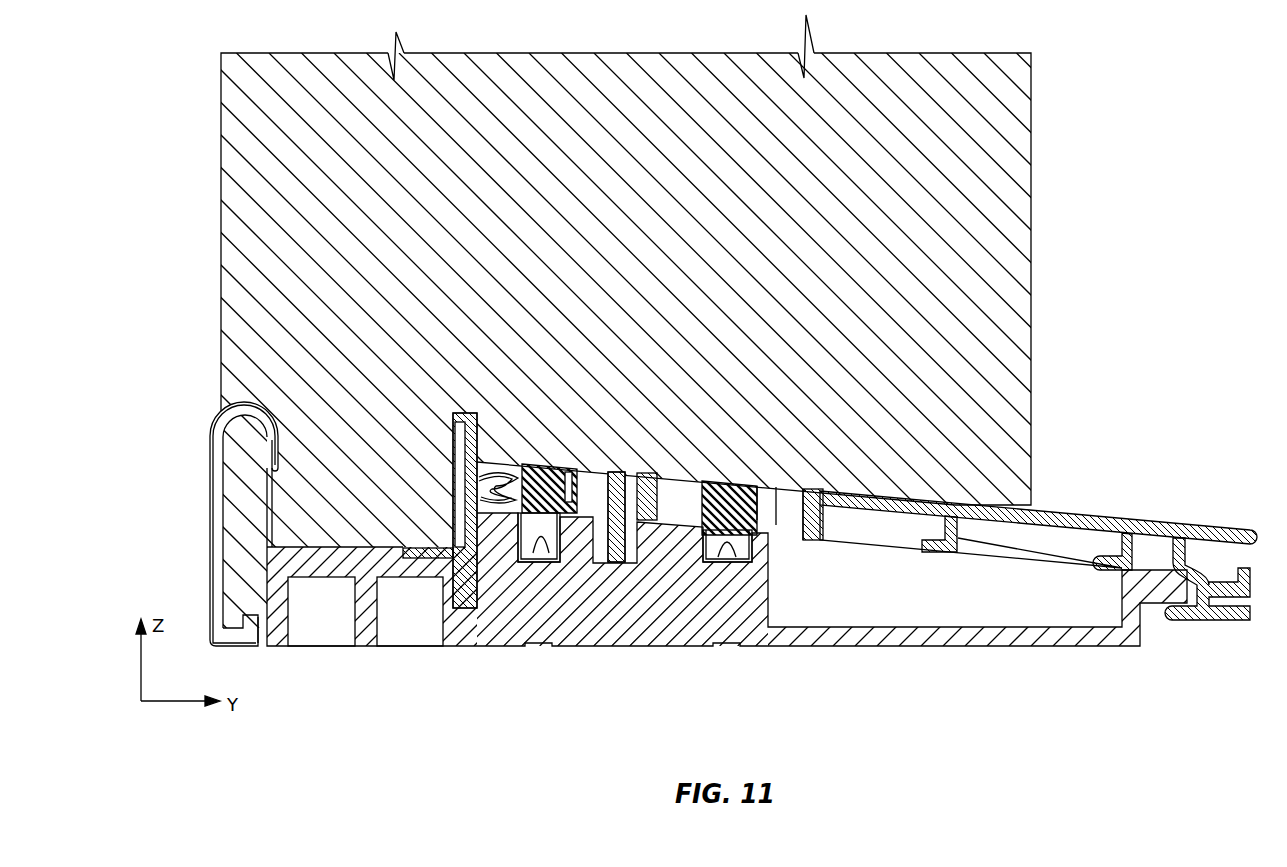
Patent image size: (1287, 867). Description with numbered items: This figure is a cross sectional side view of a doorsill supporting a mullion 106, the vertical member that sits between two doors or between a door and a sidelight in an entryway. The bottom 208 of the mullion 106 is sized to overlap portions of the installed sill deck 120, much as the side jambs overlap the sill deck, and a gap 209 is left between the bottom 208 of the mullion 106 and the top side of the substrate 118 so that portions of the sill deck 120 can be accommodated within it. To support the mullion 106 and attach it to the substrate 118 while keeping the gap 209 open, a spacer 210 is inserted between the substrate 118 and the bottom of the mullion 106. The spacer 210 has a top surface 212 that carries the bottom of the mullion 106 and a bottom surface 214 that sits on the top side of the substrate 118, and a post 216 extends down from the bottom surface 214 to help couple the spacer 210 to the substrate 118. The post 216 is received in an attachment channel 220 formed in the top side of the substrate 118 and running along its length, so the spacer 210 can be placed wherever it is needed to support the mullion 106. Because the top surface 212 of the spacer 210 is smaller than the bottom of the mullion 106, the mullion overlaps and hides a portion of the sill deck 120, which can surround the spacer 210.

The mullion 106 is at (280, 199).
The substrate 118 is at (567, 602).
The sill deck 120 is at (1082, 517).
The bottom of the mullion 208 is at (780, 530).
The gap 209 is at (833, 522).
The spacer 210 is at (743, 533).
The top surface 212 is at (595, 520).
The bottom surface 214 is at (720, 533).
The post 216 is at (617, 548).
The attachment channel 220 is at (613, 540).